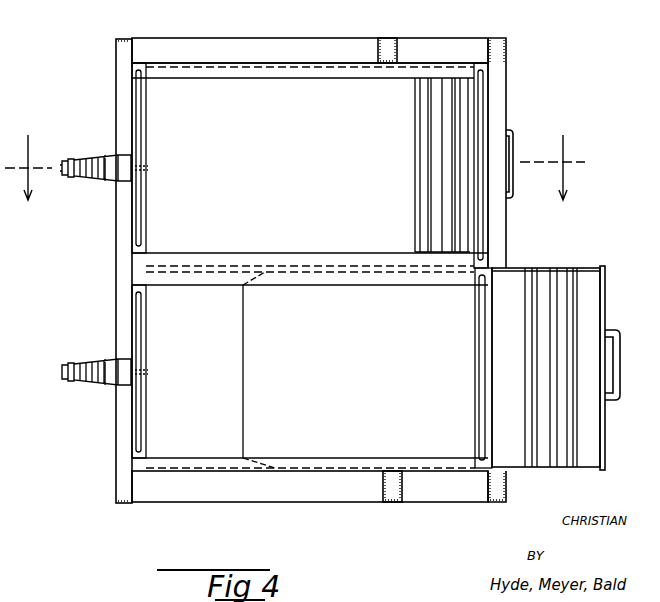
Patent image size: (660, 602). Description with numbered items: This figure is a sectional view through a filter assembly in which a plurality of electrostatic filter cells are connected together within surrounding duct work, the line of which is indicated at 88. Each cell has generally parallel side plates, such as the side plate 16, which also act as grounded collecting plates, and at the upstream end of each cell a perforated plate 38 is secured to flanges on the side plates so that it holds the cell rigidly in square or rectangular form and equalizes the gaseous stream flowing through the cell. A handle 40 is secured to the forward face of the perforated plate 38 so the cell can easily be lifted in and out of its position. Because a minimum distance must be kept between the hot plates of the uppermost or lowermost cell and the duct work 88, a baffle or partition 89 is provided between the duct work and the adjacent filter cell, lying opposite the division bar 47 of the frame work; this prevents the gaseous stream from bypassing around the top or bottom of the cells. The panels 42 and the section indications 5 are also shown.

The line of the duct work 88 is at (222, 31).
The baffle or partition 89 is at (390, 40).
The side plate 16 is at (225, 412).
The division bar 47 is at (382, 68).
The door panel 42 is at (440, 209).
The perforated plate 38 is at (606, 298).
The handle 40 is at (513, 146).
The section line 5 is at (295, 182).